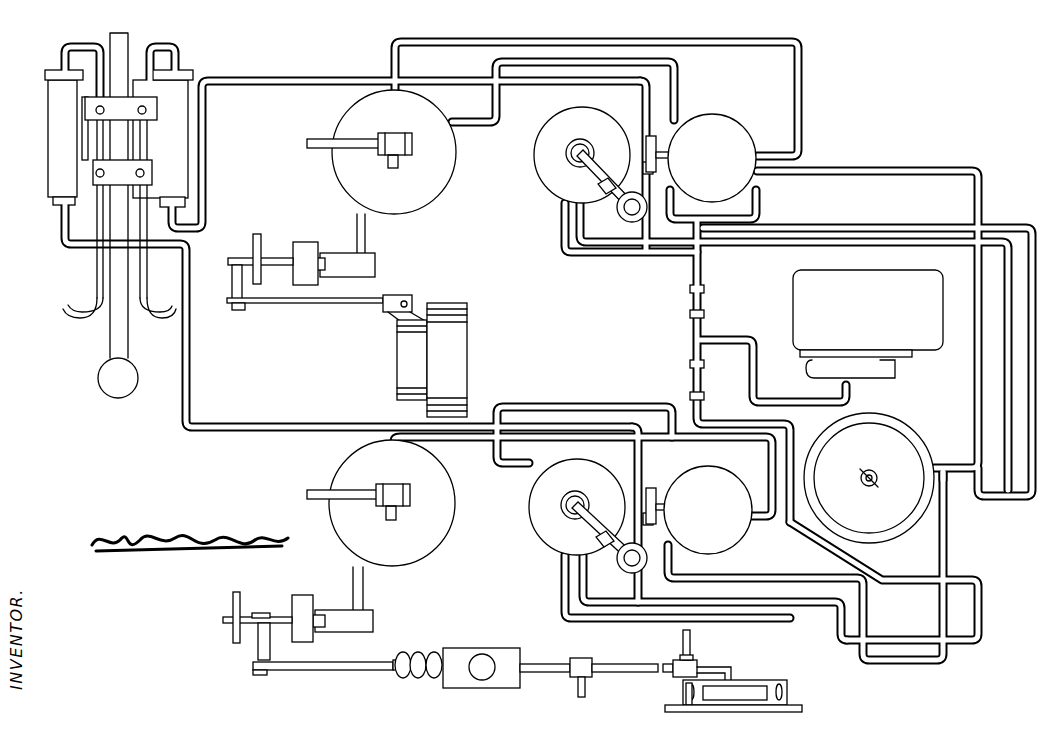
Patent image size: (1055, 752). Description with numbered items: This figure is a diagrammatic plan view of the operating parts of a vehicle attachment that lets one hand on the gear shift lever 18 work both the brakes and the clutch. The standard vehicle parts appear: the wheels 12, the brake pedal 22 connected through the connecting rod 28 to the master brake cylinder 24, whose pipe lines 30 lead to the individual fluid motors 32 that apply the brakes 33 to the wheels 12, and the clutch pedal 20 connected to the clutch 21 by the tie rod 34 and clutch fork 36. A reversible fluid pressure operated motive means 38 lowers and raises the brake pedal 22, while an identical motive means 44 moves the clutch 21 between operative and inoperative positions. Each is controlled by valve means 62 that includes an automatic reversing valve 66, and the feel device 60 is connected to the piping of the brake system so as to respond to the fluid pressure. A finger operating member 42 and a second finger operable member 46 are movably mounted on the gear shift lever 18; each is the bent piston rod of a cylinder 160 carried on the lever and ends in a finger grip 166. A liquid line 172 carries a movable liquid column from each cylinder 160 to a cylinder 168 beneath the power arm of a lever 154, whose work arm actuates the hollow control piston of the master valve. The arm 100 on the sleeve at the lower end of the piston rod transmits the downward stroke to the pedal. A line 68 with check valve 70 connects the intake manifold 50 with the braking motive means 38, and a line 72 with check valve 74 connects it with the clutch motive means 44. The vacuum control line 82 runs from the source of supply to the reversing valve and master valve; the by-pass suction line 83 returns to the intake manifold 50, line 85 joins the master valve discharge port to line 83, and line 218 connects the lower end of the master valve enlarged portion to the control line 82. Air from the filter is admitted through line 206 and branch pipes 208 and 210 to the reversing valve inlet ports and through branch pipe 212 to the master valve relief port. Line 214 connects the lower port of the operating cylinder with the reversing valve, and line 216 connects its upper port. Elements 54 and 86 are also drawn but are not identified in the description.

The wheels 12 is at (790, 706).
The gear shift lever 18 is at (110, 348).
The clutch pedal 20 is at (305, 252).
The clutch 21 is at (455, 340).
The brake pedal 22 is at (300, 603).
The brake cylinder 24 is at (472, 644).
The brake cylinder piston rod 28 is at (343, 665).
The pipe lines 30 is at (622, 666).
The fluid motors 32 is at (748, 692).
The brakes 33 is at (684, 695).
The tie rod 34 is at (318, 303).
The clutch fork 36 is at (406, 302).
The motive means 38 is at (345, 463).
The finger operating member 42 is at (97, 273).
The motive means 44 is at (342, 115).
The second finger operative member 46 is at (147, 280).
The intake manifold 50 is at (885, 378).
The pump 54 is at (836, 436).
The feel device 60 is at (598, 190).
The valve means 62 is at (534, 155).
The automatic reversing valve 66 is at (742, 131).
The line 68 is at (704, 404).
The check valve 70 is at (692, 378).
The line 72 is at (704, 276).
The check valve 74 is at (706, 306).
The vacuum control line 82 is at (672, 148).
The by-pass suction line 83 is at (760, 200).
The line 85 is at (625, 252).
The cam follower 86 is at (643, 168).
The arm 100 is at (357, 222).
The lever 154 is at (574, 163).
The cylinder 160 is at (47, 100).
The finger grip 166 is at (70, 313).
The cylinder 168 is at (622, 214).
The liquid line 172 is at (350, 81).
The line 206 is at (945, 462).
The branch pipe 208 is at (894, 164).
The branch pipe 210 is at (905, 228).
The branch pipe 212 is at (824, 242).
The line 214 is at (603, 62).
The line 216 is at (500, 42).
The line 218 is at (640, 128).